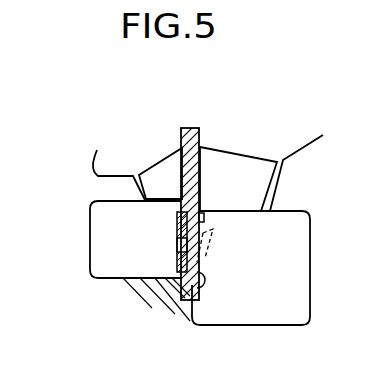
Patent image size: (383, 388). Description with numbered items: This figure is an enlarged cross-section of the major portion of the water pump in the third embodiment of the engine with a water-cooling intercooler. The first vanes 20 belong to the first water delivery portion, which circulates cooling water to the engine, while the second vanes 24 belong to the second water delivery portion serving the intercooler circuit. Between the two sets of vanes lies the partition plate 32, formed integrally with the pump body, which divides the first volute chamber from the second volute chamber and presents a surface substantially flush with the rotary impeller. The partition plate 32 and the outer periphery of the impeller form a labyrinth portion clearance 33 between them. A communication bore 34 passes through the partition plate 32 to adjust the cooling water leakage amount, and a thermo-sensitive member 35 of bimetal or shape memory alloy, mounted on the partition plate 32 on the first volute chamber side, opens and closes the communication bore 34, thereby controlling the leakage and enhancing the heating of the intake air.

The first vanes 20 is at (233, 163).
The second vanes 24 is at (159, 177).
The partition plate 32 is at (177, 272).
The labyrinth portion clearance 33 is at (203, 217).
The communication bore 34 is at (177, 245).
The thermo-sensitive member 35 is at (198, 267).